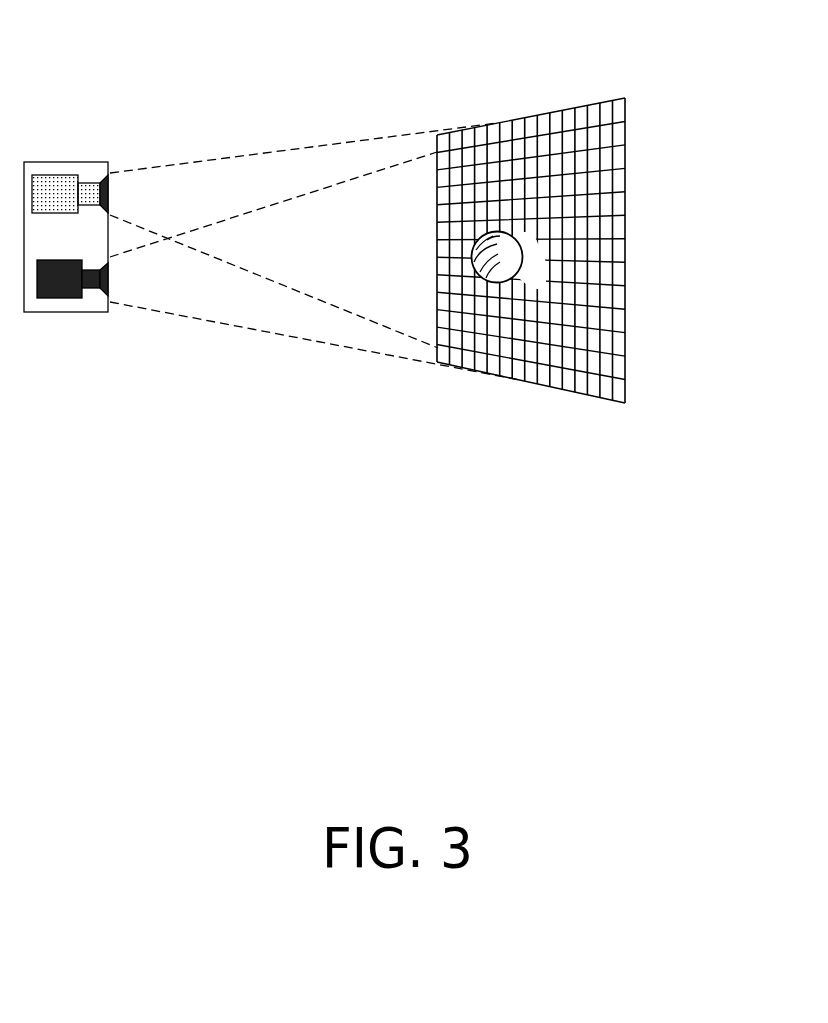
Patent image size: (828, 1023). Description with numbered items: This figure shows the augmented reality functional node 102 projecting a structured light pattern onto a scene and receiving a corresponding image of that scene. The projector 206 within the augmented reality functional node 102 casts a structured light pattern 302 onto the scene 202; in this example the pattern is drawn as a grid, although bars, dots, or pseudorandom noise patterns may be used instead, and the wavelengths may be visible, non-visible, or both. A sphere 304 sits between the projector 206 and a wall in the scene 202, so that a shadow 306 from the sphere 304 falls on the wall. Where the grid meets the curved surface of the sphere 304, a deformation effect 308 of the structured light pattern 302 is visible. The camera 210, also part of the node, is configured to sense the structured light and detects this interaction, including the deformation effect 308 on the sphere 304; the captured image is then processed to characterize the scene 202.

The augmented reality functional node 102 is at (42, 312).
The scene 202 is at (640, 403).
The projector 206 is at (53, 197).
The camera 210 is at (72, 298).
The structured light pattern 302 is at (430, 141).
The sphere 304 is at (488, 222).
The shadow 306 is at (537, 232).
The deformation effect 308 is at (478, 275).